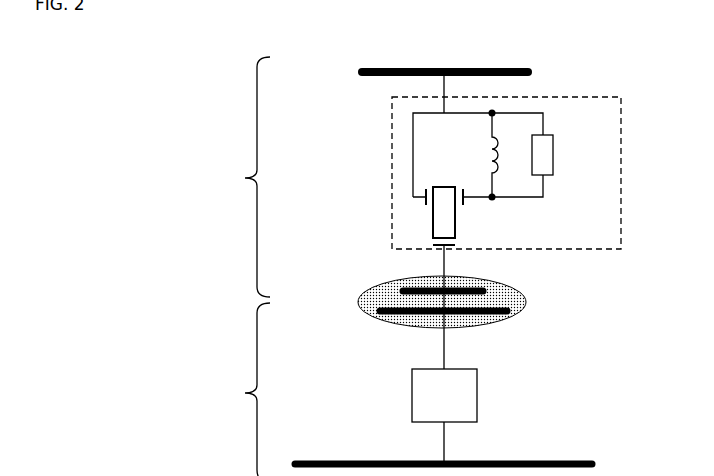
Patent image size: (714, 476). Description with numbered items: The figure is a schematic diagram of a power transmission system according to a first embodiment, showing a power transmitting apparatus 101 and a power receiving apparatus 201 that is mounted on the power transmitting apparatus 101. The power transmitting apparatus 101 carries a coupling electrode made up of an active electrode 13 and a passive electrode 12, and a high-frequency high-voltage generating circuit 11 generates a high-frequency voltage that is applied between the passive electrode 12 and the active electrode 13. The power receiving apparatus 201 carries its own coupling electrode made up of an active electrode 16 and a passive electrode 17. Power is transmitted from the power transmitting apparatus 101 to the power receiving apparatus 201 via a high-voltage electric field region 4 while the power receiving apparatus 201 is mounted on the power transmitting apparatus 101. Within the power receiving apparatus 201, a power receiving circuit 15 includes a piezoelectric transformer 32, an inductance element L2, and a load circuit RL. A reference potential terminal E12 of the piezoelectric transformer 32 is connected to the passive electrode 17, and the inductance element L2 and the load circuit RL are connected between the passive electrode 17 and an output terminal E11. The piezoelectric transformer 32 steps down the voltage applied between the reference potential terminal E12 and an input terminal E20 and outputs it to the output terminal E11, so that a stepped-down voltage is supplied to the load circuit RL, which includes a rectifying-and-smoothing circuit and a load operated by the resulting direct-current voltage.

The power receiving apparatus 201 is at (236, 177).
The power transmitting apparatus 101 is at (236, 389).
The passive electrode 17 is at (497, 68).
The power receiving circuit 15 is at (621, 97).
The inductance element L2 is at (480, 155).
The load circuit RL is at (553, 155).
The reference potential terminal E12 is at (423, 198).
The output terminal E11 is at (468, 199).
The piezoelectric transformer 32 is at (460, 222).
The input terminal E20 is at (437, 247).
The high-voltage electric field region 4 is at (526, 300).
The active electrode 16 is at (478, 286).
The active electrode 13 is at (490, 317).
The high-frequency high-voltage generating circuit 11 is at (477, 393).
The passive electrode 12 is at (557, 459).